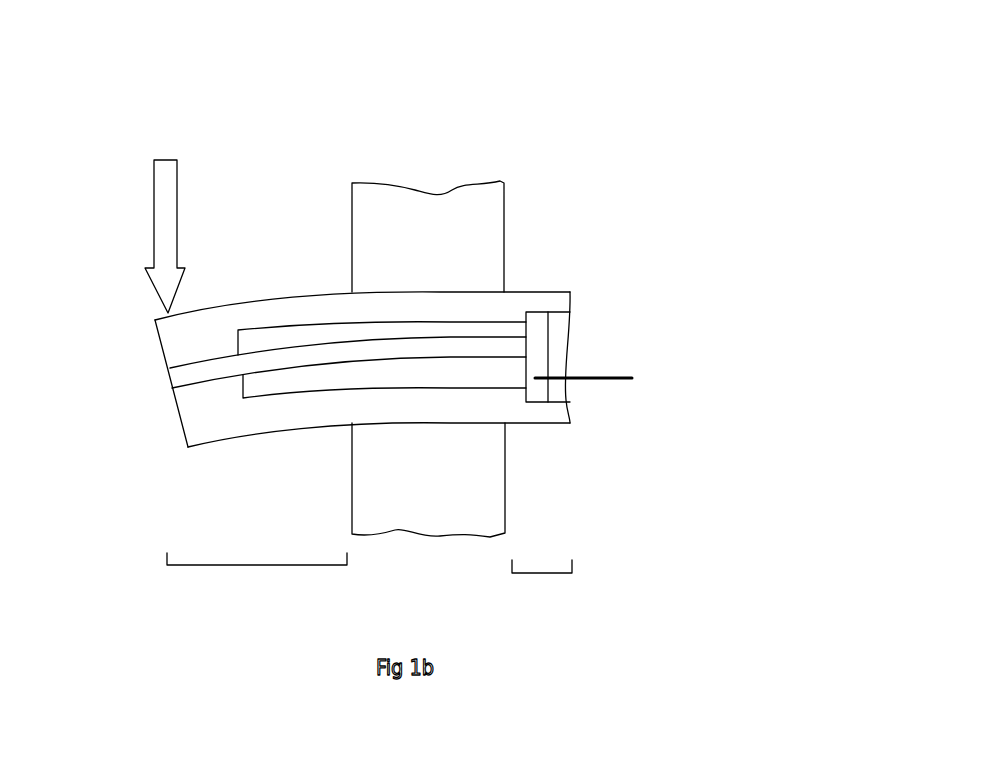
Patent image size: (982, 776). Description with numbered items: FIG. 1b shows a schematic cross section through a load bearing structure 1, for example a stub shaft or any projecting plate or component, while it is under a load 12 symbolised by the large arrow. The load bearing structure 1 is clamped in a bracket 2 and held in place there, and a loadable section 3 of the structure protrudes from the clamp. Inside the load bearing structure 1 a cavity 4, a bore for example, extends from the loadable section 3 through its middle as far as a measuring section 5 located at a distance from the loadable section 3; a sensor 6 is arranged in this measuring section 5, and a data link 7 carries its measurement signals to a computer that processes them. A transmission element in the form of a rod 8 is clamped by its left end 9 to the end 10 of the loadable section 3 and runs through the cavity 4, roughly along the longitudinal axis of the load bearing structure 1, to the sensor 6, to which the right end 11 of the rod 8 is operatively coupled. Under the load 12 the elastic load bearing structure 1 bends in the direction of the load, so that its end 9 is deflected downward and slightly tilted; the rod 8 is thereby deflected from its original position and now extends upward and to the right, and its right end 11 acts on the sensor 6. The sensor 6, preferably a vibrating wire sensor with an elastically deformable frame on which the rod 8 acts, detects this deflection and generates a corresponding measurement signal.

The load bearing structure 1 is at (217, 133).
The bracket 2 is at (402, 223).
The loadable section 3 is at (257, 565).
The cavity 4 is at (367, 388).
The measuring section 5 is at (542, 573).
The sensor 6 is at (537, 342).
The data link 7 is at (607, 378).
The rod 8 is at (292, 360).
The left end 9 is at (183, 377).
The end of loadable section 10 is at (178, 348).
The right end 11 is at (519, 347).
The load 12 is at (162, 227).